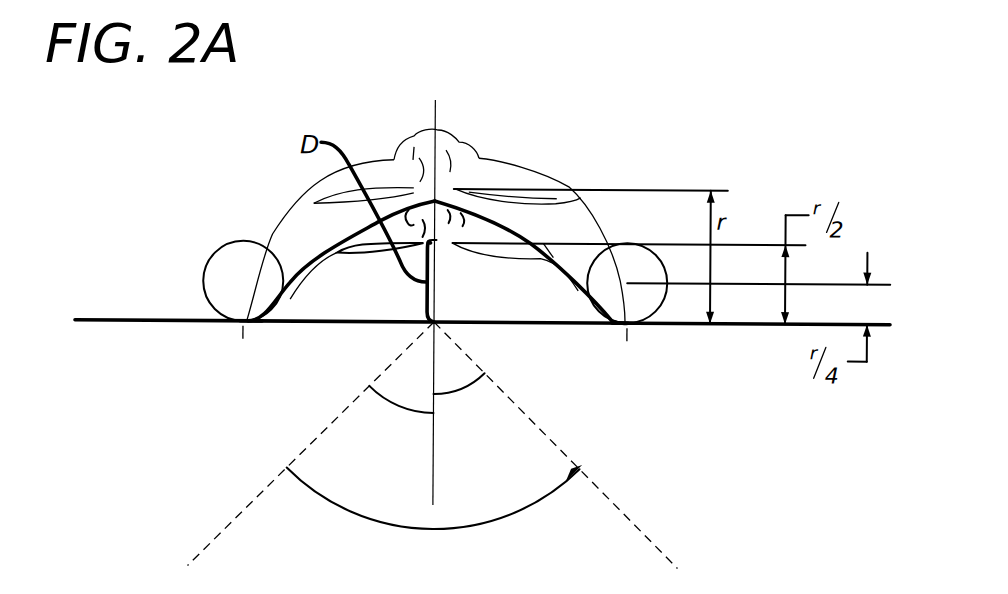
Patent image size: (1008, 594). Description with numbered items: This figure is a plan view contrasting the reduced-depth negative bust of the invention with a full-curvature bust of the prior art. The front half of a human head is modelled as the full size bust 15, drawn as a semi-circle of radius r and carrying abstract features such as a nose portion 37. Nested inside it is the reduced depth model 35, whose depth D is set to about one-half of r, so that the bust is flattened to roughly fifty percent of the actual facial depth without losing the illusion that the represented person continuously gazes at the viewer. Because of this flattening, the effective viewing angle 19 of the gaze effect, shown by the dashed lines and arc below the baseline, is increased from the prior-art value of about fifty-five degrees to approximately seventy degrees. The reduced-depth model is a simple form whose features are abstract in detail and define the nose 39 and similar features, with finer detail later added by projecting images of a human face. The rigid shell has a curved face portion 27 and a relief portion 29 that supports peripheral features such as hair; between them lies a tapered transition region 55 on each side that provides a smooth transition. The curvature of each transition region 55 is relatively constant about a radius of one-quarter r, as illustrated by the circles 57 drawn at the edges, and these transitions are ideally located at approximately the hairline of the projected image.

The full size bust 15 is at (362, 148).
The nose portion 37 is at (445, 133).
The nose 39 is at (441, 197).
The circles 57 is at (236, 240).
The reduced depth model 35 is at (337, 237).
The face portion 27 is at (537, 258).
The relief portion 29 is at (159, 318).
The tapered transition region 55 is at (268, 322).
The effective viewing angle 19 is at (432, 569).